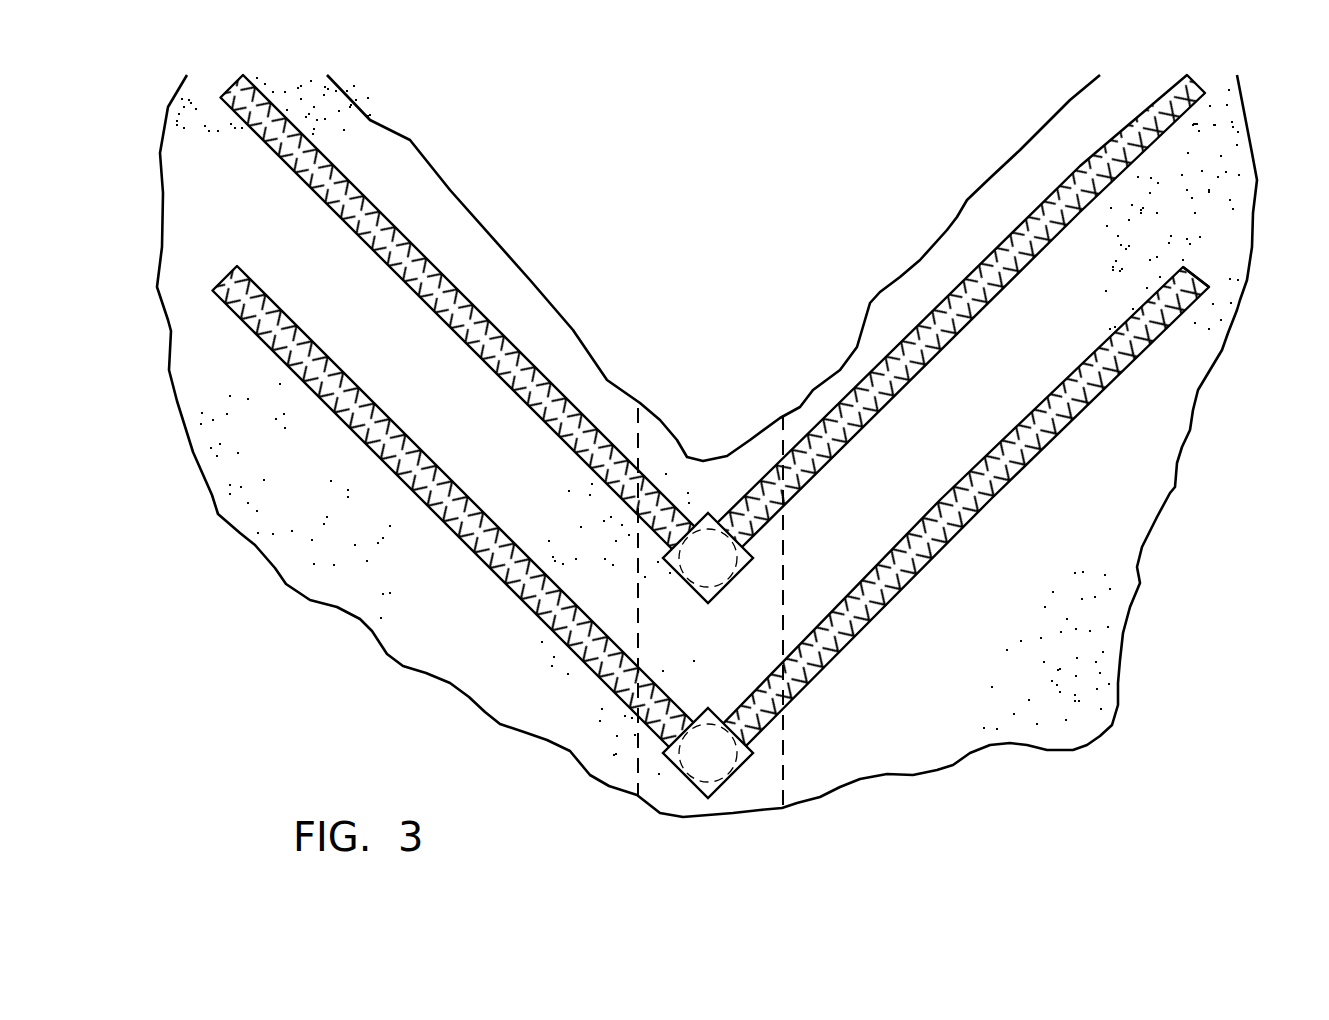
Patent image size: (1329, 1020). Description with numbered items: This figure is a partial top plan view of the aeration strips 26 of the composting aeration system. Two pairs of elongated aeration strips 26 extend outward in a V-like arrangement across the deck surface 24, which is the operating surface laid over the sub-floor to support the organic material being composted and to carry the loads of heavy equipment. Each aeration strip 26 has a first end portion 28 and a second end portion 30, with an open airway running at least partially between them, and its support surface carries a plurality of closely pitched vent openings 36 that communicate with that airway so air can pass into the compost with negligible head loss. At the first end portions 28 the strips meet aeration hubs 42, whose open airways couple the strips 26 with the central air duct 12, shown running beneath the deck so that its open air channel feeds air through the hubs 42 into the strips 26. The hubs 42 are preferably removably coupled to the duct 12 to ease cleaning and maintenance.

The central air duct 12 is at (725, 484).
The deck surface 24 is at (978, 624).
The aeration strips 26 is at (977, 313).
The first end portions 28 is at (757, 737).
The second end portions 30 is at (1200, 280).
The vent openings 36 is at (984, 466).
The aeration hubs 42 is at (740, 582).